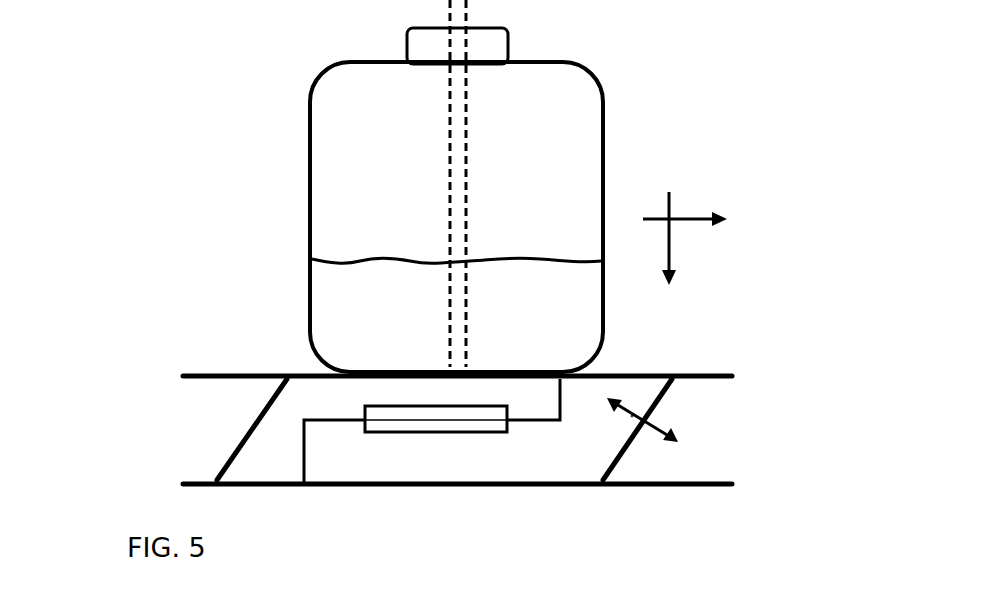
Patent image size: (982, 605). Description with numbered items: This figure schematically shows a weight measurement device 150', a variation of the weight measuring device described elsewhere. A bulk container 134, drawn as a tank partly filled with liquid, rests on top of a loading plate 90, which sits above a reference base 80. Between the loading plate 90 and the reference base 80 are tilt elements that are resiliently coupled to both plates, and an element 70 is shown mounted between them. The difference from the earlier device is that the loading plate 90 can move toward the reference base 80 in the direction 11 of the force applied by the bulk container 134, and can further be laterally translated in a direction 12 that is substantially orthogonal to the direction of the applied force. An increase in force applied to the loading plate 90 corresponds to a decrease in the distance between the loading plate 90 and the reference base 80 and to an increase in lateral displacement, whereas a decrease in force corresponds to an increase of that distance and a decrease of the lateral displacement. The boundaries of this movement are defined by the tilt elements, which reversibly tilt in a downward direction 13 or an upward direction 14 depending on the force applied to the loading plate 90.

The bulk container 134 is at (310, 160).
The lateral direction 12 is at (695, 212).
The direction of applied force 11 is at (672, 238).
The weight measurement device 150' is at (454, 435).
The loading plate 90 is at (252, 373).
The reference base 80 is at (648, 488).
The sensor 70 is at (485, 446).
The downward direction 13 is at (662, 425).
The upward direction 14 is at (630, 417).